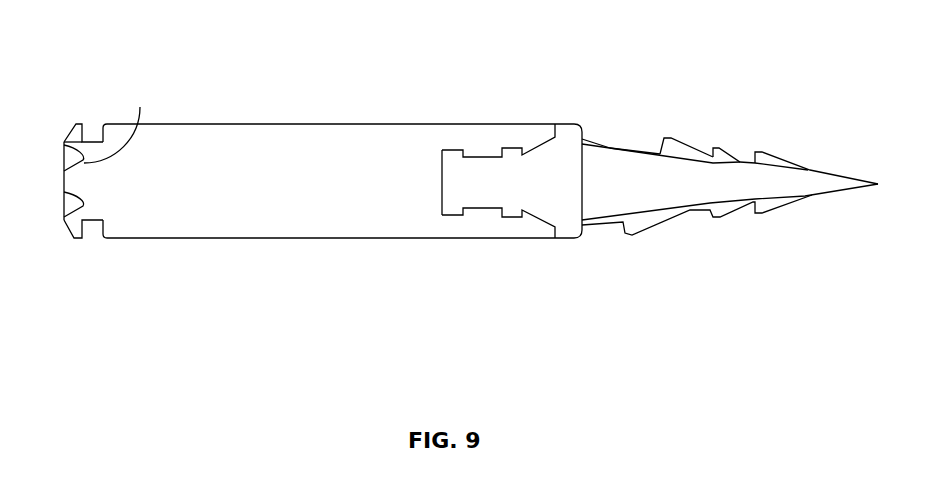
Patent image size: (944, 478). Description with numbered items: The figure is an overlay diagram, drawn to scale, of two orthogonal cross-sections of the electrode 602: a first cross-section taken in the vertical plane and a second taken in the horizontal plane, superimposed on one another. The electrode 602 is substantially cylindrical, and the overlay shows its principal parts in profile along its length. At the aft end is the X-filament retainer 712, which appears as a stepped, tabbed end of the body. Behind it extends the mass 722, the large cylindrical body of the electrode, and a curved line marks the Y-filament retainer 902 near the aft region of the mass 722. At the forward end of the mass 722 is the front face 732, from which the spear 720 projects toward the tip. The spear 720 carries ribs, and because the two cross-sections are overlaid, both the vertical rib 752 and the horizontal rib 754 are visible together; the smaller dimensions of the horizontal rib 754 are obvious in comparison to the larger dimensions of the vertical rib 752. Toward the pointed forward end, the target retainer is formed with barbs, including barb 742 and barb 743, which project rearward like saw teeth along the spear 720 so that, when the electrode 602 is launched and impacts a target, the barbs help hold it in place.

The electrode 602 is at (110, 71).
The X-filament retainer 712 is at (77, 124).
The Y-filament retainer 902 is at (140, 107).
The mass 722 is at (295, 124).
The spear 720 is at (562, 124).
The front face 732 is at (585, 138).
The horizontal rib 754 is at (610, 147).
The vertical rib 752 is at (648, 150).
The barb 742 is at (690, 144).
The barb 743 is at (725, 152).